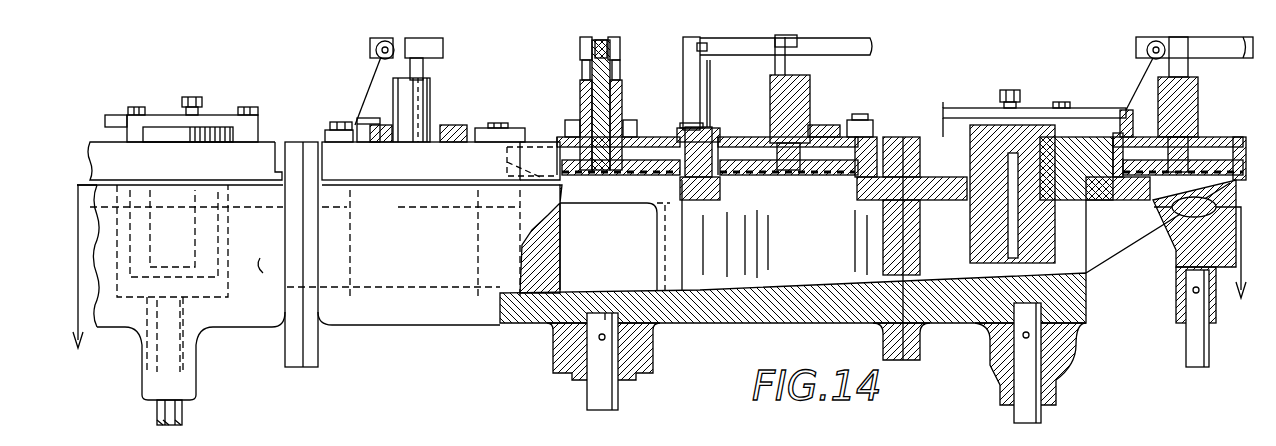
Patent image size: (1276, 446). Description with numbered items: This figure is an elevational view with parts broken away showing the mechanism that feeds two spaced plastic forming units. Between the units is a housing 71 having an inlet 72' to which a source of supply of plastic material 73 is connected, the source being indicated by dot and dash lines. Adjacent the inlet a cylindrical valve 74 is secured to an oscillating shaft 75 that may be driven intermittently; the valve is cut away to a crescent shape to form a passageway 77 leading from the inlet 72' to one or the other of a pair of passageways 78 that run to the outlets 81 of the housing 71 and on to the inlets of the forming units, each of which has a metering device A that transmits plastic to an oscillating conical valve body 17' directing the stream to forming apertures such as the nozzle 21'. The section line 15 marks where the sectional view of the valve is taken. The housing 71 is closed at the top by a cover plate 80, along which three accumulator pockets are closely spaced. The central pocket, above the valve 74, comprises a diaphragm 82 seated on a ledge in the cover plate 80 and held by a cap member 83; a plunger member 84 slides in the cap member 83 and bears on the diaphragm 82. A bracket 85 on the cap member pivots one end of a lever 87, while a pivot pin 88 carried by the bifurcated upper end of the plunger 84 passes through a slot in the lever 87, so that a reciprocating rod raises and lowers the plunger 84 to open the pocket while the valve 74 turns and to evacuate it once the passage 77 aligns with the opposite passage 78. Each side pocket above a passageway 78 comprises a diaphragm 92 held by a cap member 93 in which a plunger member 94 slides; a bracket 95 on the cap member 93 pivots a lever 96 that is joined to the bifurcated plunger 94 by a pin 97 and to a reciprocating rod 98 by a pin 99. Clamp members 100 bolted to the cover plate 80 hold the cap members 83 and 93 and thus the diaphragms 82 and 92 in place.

The section line 15 is at (655, 277).
The housing 71 is at (449, 308).
The outlets of the housing 81 is at (323, 258).
The passageways 78 is at (388, 240).
The cover plate 80 is at (450, 163).
The metering device A is at (221, 86).
The clamp members 100 is at (320, 133).
The cap member 93 is at (398, 95).
The plunger member 94 is at (390, 63).
The pin 97 is at (427, 30).
The lever 96 is at (370, 43).
The bracket 95 is at (453, 125).
The bracket 85 is at (562, 137).
The plunger member 84 is at (560, 143).
The lever 87 is at (598, 37).
The pivot pin 88 is at (578, 48).
The cap member 83 is at (652, 137).
The reciprocating rod 98 is at (692, 82).
The pin 99 is at (697, 40).
The cylindrical valve 74 is at (512, 268).
The diaphragm 82 is at (580, 203).
The passageway 77 is at (609, 266).
The passage 72' is at (647, 246).
The oscillating shaft 75 is at (590, 393).
The source of supply 73 is at (570, 445).
The diaphragm 92 is at (800, 175).
The conical valve body 17' is at (1086, 181).
The forming aperture 21' is at (1173, 273).